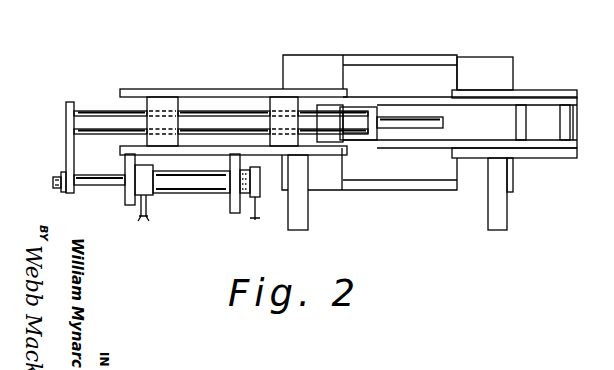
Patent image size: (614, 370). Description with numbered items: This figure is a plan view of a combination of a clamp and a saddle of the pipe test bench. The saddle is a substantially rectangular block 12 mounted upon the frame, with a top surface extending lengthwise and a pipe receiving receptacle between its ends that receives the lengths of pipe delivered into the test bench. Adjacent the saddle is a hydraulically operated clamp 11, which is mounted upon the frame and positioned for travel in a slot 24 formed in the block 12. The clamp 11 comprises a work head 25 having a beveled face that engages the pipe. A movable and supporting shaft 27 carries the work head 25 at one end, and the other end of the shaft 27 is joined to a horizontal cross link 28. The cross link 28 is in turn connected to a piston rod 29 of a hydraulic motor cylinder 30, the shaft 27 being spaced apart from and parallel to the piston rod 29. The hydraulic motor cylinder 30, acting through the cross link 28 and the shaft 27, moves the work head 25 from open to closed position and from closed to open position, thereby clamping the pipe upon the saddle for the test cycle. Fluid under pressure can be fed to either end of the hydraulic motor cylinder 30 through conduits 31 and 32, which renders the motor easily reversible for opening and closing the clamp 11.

The clamp 11 is at (307, 50).
The block 12 is at (418, 182).
The slot 24 is at (502, 115).
The work head 25 is at (420, 119).
The shaft 27 is at (227, 111).
The horizontal cross link 28 is at (66, 120).
The piston rod 29 is at (113, 187).
The hydraulic motor cylinder 30 is at (193, 197).
The conduit 31 is at (148, 211).
The conduit 32 is at (252, 215).